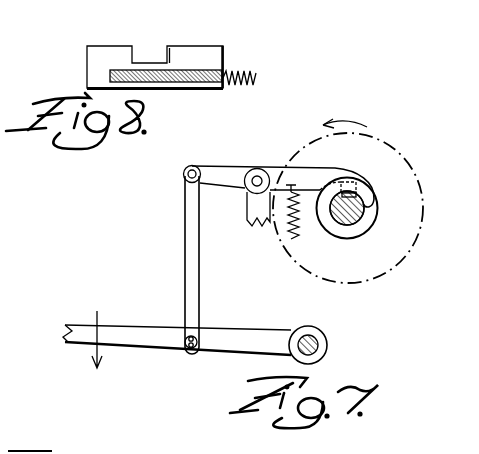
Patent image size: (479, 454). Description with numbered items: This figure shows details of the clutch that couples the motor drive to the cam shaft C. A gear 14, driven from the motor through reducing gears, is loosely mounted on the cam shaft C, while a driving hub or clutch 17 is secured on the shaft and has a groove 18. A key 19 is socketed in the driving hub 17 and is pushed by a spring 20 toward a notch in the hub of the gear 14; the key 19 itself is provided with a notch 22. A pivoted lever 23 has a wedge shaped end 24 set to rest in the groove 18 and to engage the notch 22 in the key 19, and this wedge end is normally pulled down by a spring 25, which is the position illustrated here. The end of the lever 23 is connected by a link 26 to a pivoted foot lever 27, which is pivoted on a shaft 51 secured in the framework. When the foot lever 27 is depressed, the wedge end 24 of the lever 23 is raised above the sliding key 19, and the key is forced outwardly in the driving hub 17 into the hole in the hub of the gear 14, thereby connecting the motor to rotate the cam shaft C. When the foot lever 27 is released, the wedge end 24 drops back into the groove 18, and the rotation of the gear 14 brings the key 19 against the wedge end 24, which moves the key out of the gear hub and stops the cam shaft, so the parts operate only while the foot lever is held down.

In FIG. 7, the gear 14 is at (350, 280).
In FIG. 7, the driving hub or clutch 17 is at (366, 204).
In FIG. 7, the groove 18 is at (367, 217).
In FIG. 8, the key 19 is at (227, 50).
In FIG. 8, the spring 20 is at (243, 91).
In FIG. 8, the notch 22 is at (144, 58).
In FIG. 7, the pivoted lever 23 is at (322, 175).
In FIG. 7, the wedge shaped end 24 is at (369, 202).
In FIG. 7, the spring 25 is at (284, 237).
In FIG. 7, the link 26 is at (185, 242).
In FIG. 7, the foot lever 27 is at (240, 328).
In FIG. 7, the shaft 51 is at (306, 328).
In FIG. 7, the cam shaft C is at (342, 223).